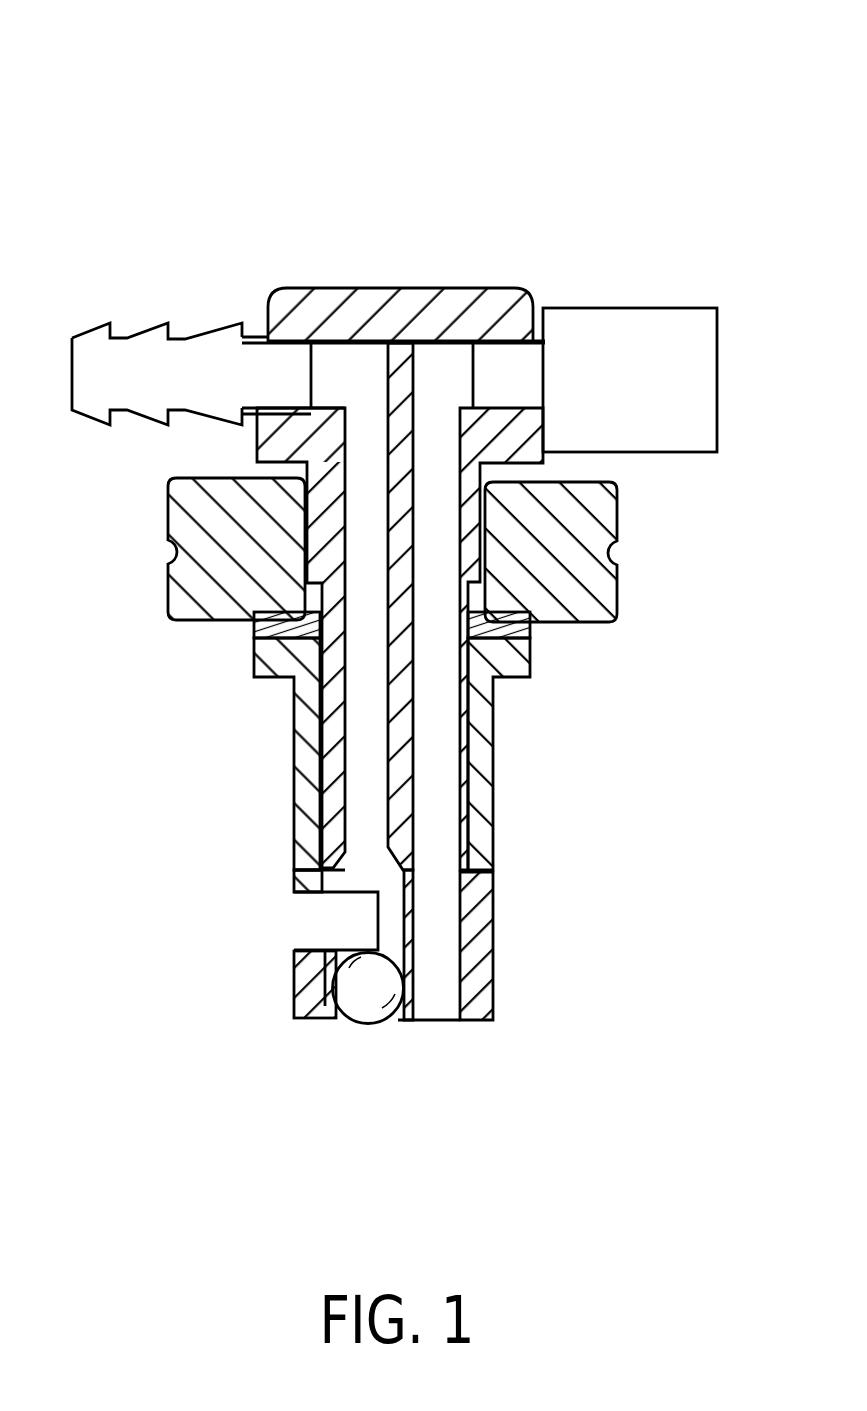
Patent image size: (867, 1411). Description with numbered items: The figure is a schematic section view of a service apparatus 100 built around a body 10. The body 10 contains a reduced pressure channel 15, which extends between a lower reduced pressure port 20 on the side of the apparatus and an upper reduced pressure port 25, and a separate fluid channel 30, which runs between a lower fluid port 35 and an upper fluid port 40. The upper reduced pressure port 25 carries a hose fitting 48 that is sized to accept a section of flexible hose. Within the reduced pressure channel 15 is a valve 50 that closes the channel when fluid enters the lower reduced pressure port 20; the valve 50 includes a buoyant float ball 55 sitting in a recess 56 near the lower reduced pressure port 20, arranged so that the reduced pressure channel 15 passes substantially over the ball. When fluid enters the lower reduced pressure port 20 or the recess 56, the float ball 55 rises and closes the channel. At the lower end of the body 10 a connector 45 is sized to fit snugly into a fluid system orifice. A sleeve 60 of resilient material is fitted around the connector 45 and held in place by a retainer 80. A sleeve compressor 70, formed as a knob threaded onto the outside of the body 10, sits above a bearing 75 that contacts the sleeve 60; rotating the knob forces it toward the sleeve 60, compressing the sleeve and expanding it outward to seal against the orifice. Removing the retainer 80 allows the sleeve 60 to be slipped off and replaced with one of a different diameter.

The service apparatus 100 is at (419, 127).
The body 10 is at (385, 288).
The reduced pressure channel 15 is at (337, 370).
The lower reduced pressure port 20 is at (303, 923).
The upper reduced pressure port 25 is at (277, 412).
The fluid channel 30 is at (445, 367).
The lower fluid port 35 is at (433, 1022).
The upper fluid port 40 is at (537, 316).
The connector 45 is at (292, 703).
The hose fitting 48 is at (148, 363).
The valve 50 is at (360, 868).
The float ball 55 is at (360, 998).
The recess 56 is at (398, 1022).
The sleeve 60 is at (493, 800).
The sleeve compressor 70 is at (617, 553).
The bearing 75 is at (512, 627).
The retainer 80 is at (292, 987).